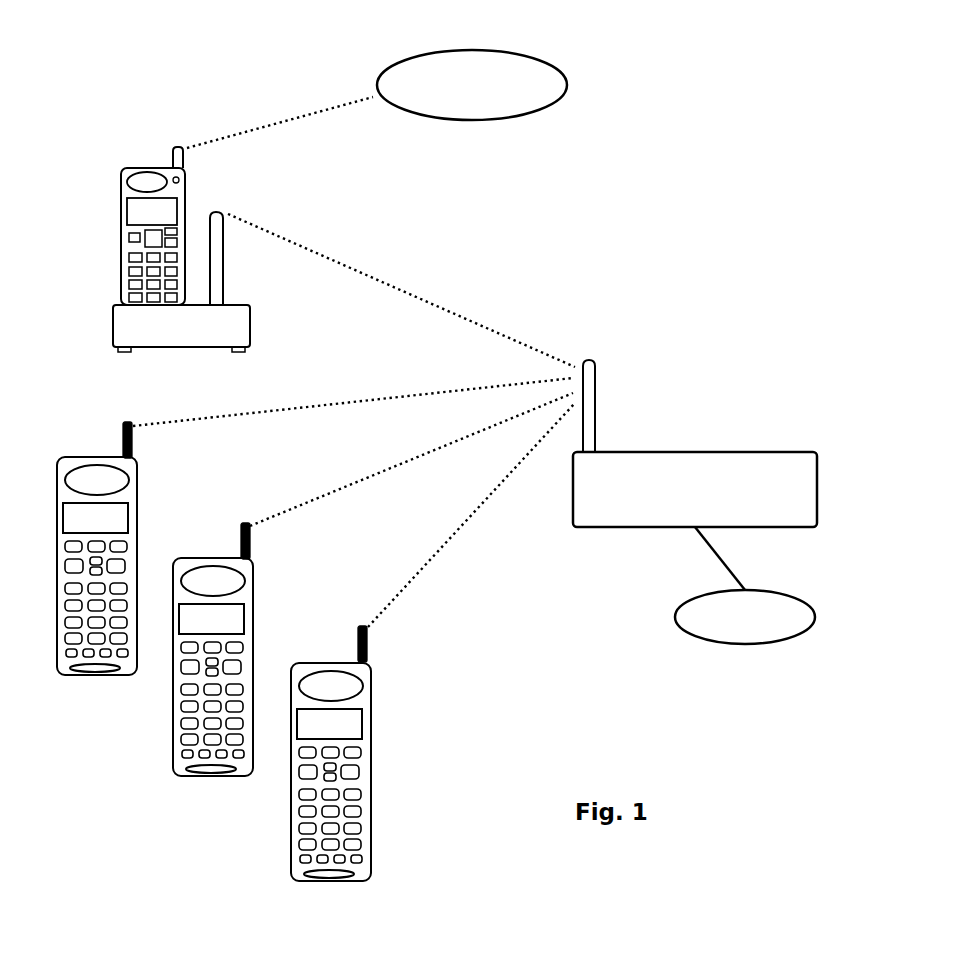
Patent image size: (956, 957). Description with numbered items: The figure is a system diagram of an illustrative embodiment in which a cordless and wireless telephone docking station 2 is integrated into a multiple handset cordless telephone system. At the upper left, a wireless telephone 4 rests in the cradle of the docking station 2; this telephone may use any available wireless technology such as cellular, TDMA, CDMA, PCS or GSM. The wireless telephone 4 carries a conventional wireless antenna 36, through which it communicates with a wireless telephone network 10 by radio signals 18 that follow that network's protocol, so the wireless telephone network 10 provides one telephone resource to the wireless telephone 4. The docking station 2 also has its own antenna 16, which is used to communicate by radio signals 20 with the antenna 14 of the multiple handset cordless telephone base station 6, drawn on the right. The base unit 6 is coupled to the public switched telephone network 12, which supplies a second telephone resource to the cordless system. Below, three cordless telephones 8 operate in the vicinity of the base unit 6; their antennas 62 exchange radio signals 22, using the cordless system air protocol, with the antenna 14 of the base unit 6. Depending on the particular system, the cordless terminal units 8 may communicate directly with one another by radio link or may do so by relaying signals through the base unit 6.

The docking station 2 is at (113, 330).
The wireless telephone 4 is at (122, 237).
The multiple handset cordless telephone base station 6 is at (725, 452).
The cordless telephones 8 is at (95, 677).
The wireless telephone network 10 is at (557, 65).
The public switched telephone network 12 is at (708, 642).
The antenna 14 is at (596, 382).
The antenna 16 is at (224, 263).
The radio signals 18 is at (287, 121).
The radio signals 20 is at (407, 293).
The radio signals 22 is at (320, 405).
The wireless antenna 36 is at (173, 155).
The antennas 62 is at (123, 444).